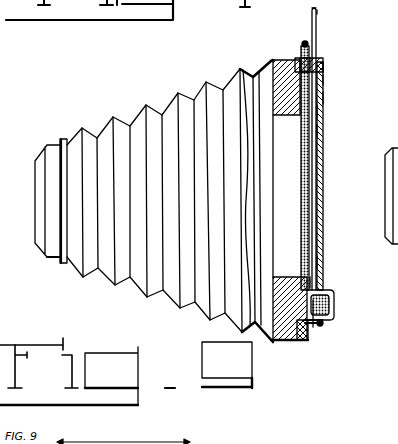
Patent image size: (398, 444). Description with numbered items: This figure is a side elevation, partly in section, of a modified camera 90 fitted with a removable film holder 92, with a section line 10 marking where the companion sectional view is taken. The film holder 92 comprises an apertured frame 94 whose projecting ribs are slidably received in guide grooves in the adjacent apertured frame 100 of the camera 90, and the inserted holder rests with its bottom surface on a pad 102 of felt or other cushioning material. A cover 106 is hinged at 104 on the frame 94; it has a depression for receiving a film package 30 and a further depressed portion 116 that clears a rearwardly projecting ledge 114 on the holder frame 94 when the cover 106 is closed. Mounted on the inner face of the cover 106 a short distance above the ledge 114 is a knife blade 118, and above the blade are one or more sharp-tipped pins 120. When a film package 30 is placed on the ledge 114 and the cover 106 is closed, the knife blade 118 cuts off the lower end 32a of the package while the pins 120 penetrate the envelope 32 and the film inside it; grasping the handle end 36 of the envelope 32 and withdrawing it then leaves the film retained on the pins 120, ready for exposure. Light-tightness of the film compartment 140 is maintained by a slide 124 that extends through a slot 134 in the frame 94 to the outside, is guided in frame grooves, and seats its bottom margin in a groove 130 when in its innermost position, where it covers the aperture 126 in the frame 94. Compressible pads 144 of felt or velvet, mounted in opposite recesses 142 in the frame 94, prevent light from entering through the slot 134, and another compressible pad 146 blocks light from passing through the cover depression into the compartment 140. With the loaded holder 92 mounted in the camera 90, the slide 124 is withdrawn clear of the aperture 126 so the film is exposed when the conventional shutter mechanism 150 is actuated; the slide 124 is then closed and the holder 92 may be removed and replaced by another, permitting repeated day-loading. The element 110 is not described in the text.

The section line 10- 10 is at (233, 186).
The film package 30 is at (318, 14).
The envelope 32 is at (317, 23).
The lower end of film package 32a is at (315, 328).
The handle end 36 is at (311, 10).
The camera 90 is at (146, 104).
The film holder 92 is at (322, 63).
The apertured frame 94 is at (269, 62).
The apertured frame of the camera 100 is at (271, 72).
The pad 102 is at (305, 340).
The hinge 104 is at (323, 323).
The cover 106 is at (322, 227).
The retainer 110 is at (324, 331).
The ledge 114 is at (324, 298).
The depressed portion 116 is at (332, 311).
The knife blade 118 is at (297, 345).
The pins 120 is at (312, 281).
The slide 124 is at (304, 40).
The aperture 126 is at (320, 112).
The groove 130 is at (322, 262).
The slot 134 is at (324, 98).
The film compartment 140 is at (320, 132).
The recesses 142 is at (303, 57).
The compressible pads 144 is at (301, 62).
The compressible pad 146 is at (326, 79).
The shutter mechanism 150 is at (67, 140).